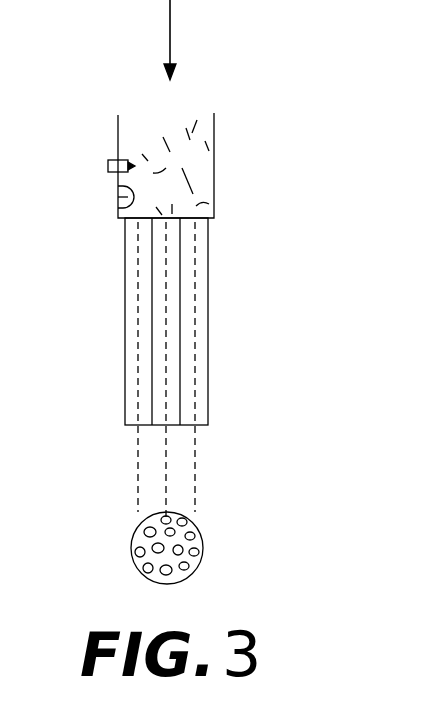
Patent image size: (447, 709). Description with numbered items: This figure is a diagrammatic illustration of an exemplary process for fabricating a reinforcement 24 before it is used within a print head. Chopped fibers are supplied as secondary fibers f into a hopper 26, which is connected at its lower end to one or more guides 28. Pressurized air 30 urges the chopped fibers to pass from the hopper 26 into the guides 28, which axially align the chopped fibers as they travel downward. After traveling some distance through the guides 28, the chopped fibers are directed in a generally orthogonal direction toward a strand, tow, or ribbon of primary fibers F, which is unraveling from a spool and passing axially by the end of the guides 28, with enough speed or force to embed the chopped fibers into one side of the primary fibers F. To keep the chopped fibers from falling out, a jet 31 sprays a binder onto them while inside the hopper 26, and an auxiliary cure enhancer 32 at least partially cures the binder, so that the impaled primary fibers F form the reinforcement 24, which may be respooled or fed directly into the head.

The pressurized air 30 is at (170, 22).
The hopper 26 is at (214, 163).
The secondary fibers f is at (193, 132).
The jet 31 is at (108, 165).
The auxiliary cure enhancer 32 is at (122, 198).
The guides 28 is at (145, 318).
The reinforcement 24 is at (196, 572).
The primary fibers F is at (146, 572).